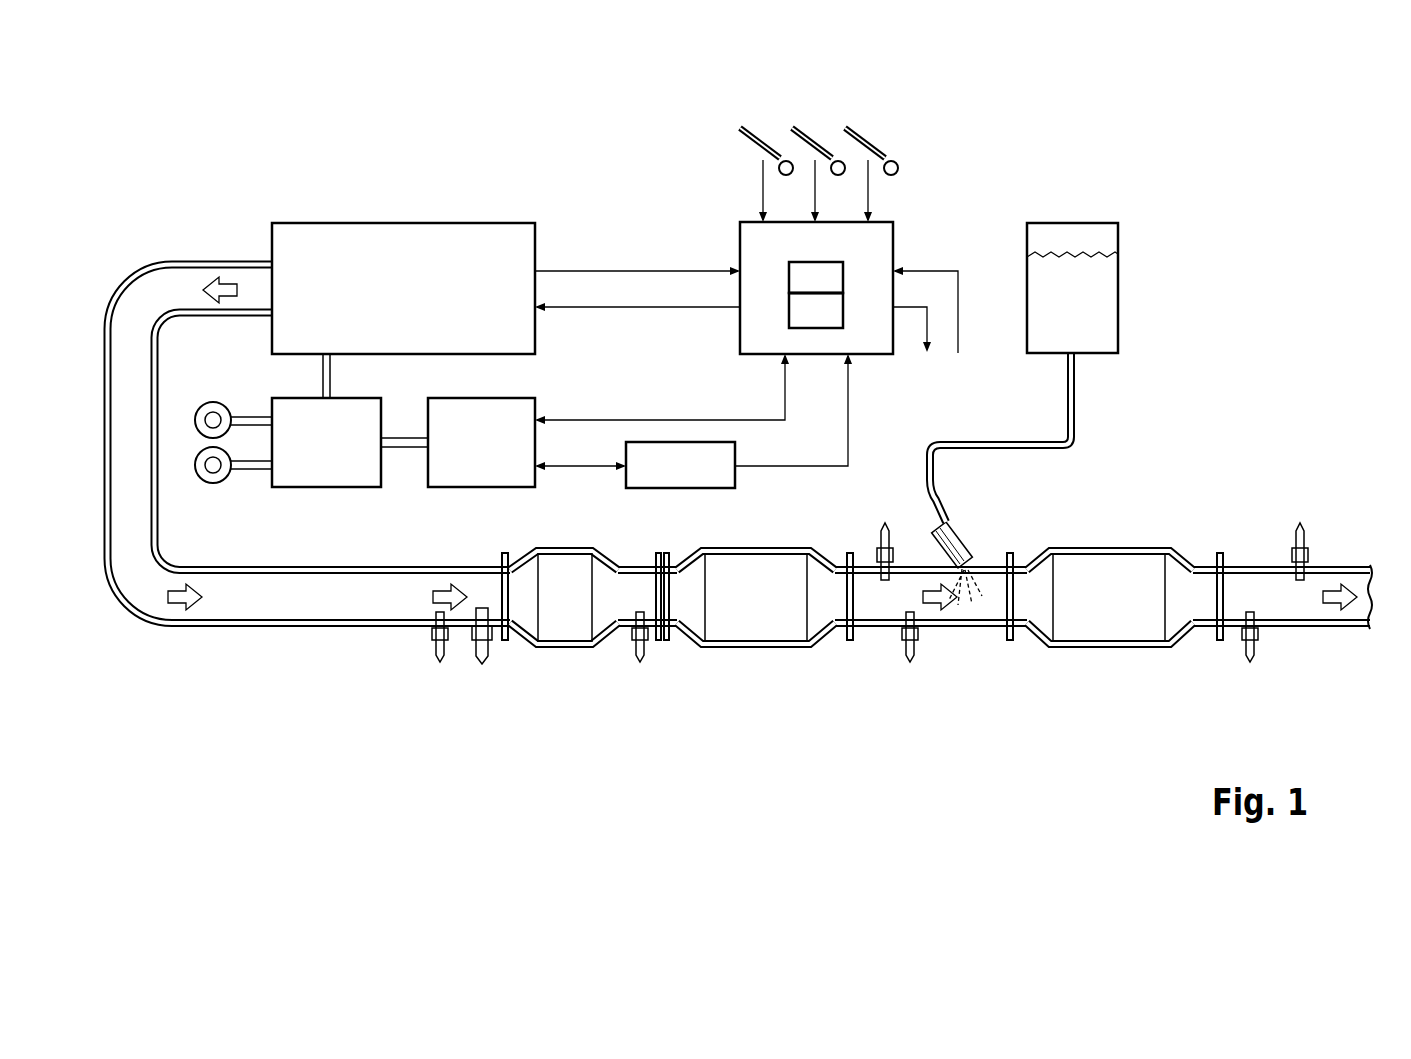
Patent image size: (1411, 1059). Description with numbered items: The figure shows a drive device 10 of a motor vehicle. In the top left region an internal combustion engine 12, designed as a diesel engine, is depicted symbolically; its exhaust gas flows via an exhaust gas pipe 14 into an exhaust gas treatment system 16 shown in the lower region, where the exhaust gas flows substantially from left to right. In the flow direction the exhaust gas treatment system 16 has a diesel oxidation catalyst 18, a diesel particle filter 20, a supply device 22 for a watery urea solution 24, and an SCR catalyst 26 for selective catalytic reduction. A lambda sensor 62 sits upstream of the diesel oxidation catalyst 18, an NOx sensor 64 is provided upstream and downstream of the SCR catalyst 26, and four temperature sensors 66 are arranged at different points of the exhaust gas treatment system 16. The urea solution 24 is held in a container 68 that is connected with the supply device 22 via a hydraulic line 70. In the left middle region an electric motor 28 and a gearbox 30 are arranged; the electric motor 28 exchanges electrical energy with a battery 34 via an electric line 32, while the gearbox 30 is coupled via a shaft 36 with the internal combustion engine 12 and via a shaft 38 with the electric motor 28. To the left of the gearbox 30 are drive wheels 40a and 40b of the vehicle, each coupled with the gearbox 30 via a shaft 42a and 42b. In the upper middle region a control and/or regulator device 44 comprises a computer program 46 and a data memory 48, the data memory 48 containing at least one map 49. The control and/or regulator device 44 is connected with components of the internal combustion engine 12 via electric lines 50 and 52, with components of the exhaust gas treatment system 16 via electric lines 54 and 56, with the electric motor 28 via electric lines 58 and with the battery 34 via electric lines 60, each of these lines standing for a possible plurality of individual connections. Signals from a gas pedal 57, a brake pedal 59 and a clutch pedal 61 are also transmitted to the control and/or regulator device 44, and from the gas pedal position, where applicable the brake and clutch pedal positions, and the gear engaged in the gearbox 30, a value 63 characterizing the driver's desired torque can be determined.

The drive device 10 is at (670, 766).
The internal combustion engine 12 is at (403, 262).
The exhaust gas pipe 14 is at (167, 287).
The exhaust gas treatment system 16 is at (825, 690).
The diesel oxidation catalyst 18 is at (567, 630).
The diesel particle filter 20 is at (755, 630).
The supply device 22 is at (965, 540).
The watery urea solution 24 is at (1105, 307).
The SCR catalyst 26 is at (1112, 630).
The electric motor 28 is at (468, 488).
The gearbox 30 is at (327, 488).
The electric line 32 is at (578, 468).
The battery 34 is at (697, 442).
The shaft 36 is at (332, 372).
The shaft 38 is at (405, 450).
The drive wheel 40a is at (213, 485).
The drive wheel 40b is at (213, 402).
The shaft 42a is at (255, 472).
The shaft 42b is at (250, 415).
The control and/or regulator device 44 is at (893, 243).
The computer program 46 is at (835, 276).
The data memory 48 is at (835, 311).
The map 49 is at (797, 315).
The electric line 50 is at (612, 268).
The electric line 52 is at (656, 305).
The electric line 54 is at (958, 310).
The electric line 56 is at (935, 325).
The gas pedal 57 is at (768, 135).
The electric lines 58 is at (645, 418).
The brake pedal 59 is at (818, 135).
The electric lines 60 is at (848, 400).
The clutch pedal 61 is at (868, 135).
The lambda sensor 62 is at (478, 656).
The value characterizing a driver's desired torque 63 is at (896, 144).
The NOx sensor 64 is at (881, 538).
The temperature sensors 66 is at (436, 655).
The container 68 is at (1105, 238).
The hydraulic line 70 is at (1078, 412).